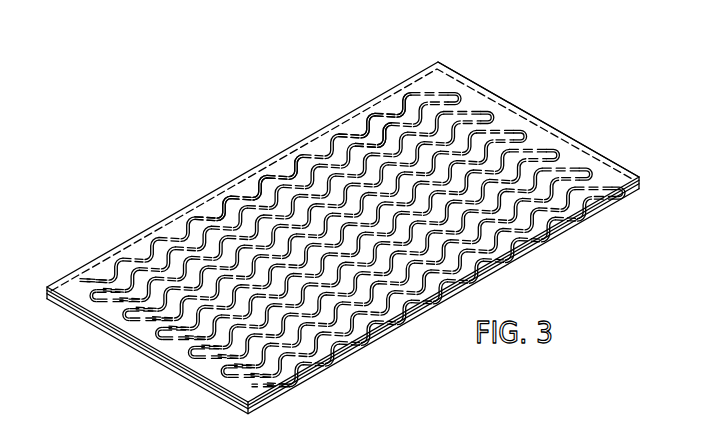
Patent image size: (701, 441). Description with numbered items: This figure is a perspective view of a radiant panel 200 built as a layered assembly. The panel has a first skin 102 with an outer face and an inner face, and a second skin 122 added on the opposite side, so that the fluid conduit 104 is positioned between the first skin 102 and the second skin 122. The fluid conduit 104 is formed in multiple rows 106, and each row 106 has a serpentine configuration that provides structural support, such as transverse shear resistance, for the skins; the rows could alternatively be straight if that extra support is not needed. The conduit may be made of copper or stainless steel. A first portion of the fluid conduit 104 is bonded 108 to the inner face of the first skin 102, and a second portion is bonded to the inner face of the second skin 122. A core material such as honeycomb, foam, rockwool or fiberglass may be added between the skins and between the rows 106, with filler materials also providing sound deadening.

The radiant panel 200 is at (548, 46).
The first skin 102 is at (611, 208).
The fluid conduit 104 is at (80, 281).
The rows 106 is at (417, 133).
The bonded portion 108 is at (287, 170).
The second skin 122 is at (527, 113).